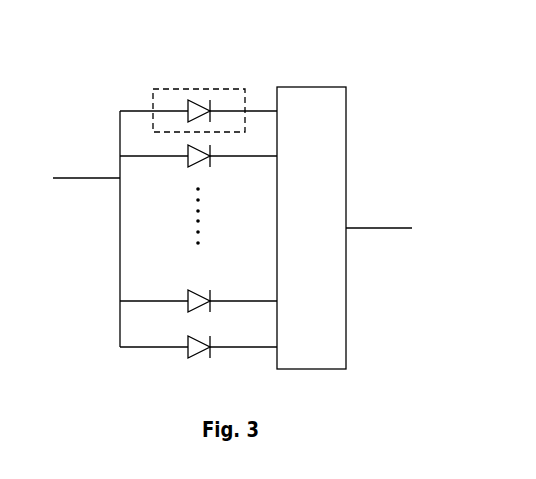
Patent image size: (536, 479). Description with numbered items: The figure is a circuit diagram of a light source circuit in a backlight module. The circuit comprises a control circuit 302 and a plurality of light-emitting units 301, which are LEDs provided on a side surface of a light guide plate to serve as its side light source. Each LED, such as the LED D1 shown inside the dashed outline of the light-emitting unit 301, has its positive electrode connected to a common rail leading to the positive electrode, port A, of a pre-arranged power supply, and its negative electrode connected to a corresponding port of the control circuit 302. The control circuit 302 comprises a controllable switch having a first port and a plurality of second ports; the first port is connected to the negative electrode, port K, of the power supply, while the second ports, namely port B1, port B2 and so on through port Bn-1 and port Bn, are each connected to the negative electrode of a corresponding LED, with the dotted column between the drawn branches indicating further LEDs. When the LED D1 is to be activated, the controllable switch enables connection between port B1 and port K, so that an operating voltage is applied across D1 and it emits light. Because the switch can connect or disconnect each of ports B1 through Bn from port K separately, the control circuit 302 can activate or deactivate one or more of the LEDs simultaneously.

The light-emitting unit 301 is at (211, 94).
The control circuit 302 is at (311, 228).
The LED D1 is at (215, 113).
The port A is at (86, 167).
The port K is at (379, 218).
The port B1 is at (198, 119).
The port B2 is at (198, 159).
The port Bn-1 is at (198, 307).
The port Bn is at (198, 351).